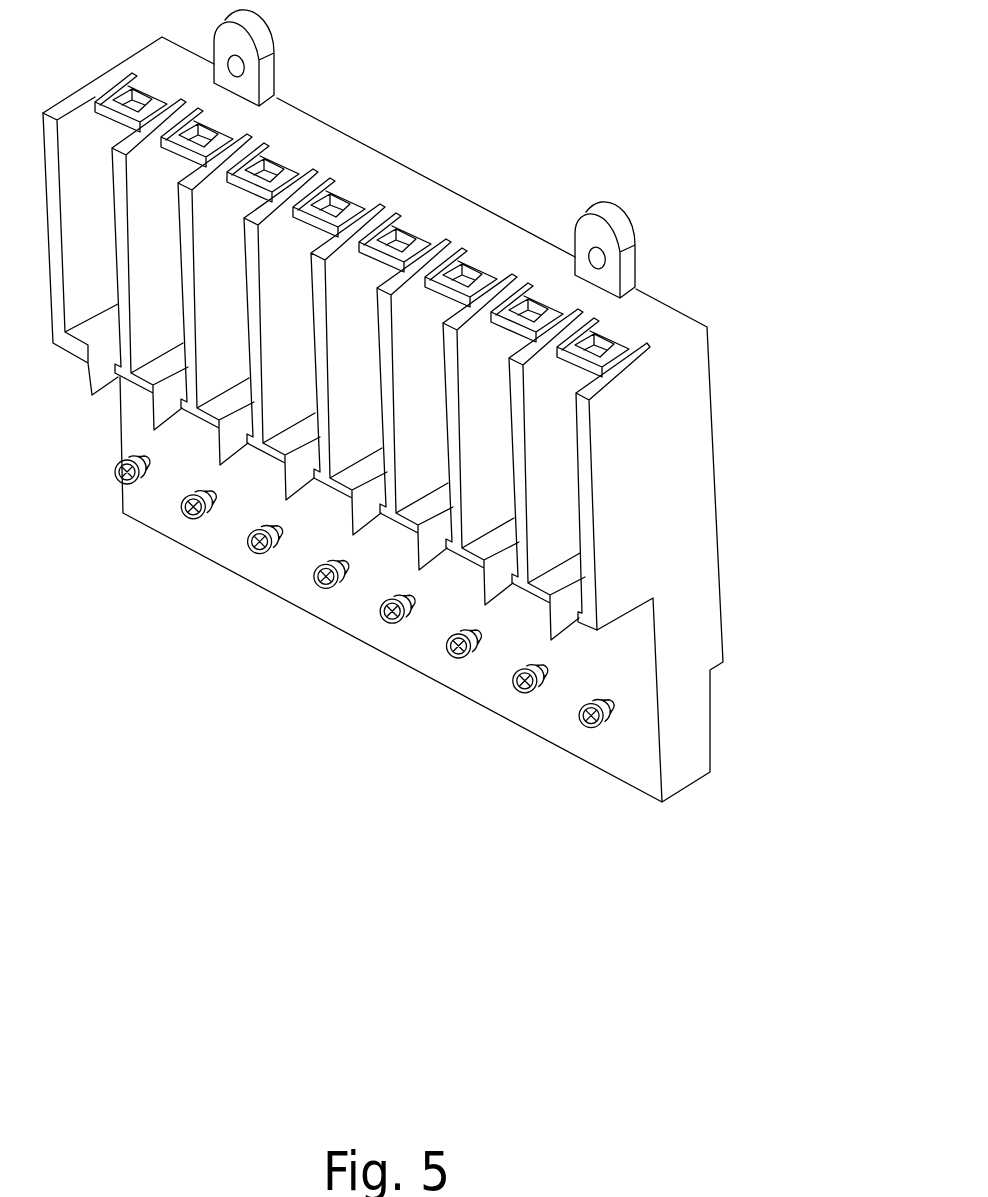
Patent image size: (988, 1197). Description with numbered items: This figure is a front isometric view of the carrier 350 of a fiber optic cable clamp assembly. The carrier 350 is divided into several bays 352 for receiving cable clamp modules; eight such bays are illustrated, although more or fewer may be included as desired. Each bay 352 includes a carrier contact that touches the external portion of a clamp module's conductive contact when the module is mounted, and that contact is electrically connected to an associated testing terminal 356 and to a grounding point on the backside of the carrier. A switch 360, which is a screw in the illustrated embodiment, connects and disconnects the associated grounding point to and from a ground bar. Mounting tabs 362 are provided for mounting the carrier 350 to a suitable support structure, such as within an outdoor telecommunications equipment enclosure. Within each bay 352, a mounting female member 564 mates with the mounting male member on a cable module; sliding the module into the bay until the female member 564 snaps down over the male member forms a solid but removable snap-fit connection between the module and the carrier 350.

The carrier 350 is at (474, 460).
The bay 352 is at (548, 548).
The testing terminal 356 is at (564, 621).
The switch 360 is at (600, 735).
The mounting tab 362 is at (275, 53).
The mounting female member 564 is at (522, 293).